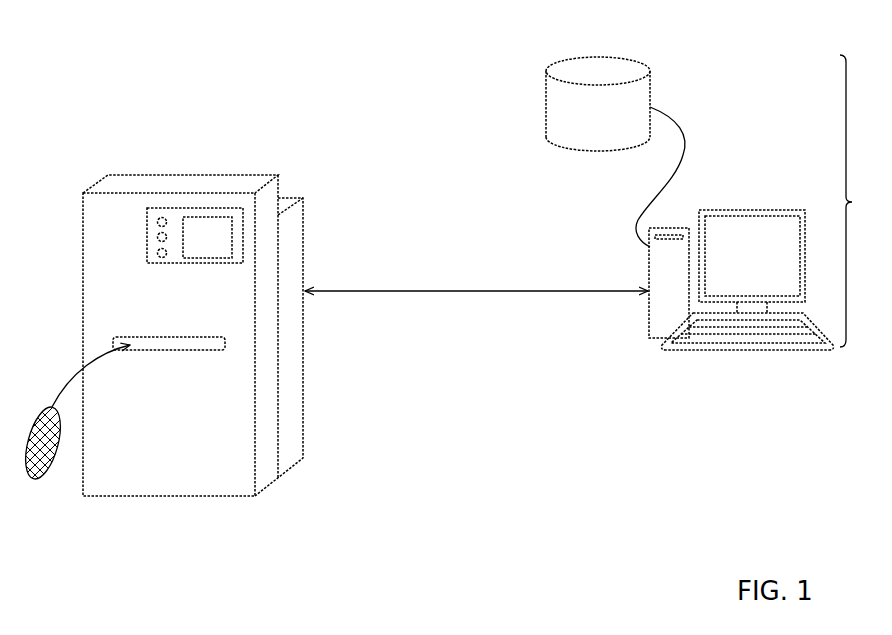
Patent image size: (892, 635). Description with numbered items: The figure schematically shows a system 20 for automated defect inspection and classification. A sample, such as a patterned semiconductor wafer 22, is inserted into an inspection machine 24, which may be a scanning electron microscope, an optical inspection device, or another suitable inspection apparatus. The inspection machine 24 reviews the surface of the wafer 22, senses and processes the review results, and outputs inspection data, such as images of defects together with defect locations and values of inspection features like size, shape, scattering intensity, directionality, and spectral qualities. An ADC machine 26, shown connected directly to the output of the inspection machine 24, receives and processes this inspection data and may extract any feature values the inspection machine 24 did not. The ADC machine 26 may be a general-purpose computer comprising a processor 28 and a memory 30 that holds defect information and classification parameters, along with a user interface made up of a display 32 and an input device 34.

The system 20 is at (84, 122).
The patterned semiconductor wafer 22 is at (38, 480).
The inspection machine 24 is at (195, 175).
The ADC machine 26 is at (858, 201).
The processor 28 is at (649, 330).
The memory 30 is at (546, 107).
The display 32 is at (745, 210).
The input device 34 is at (822, 350).